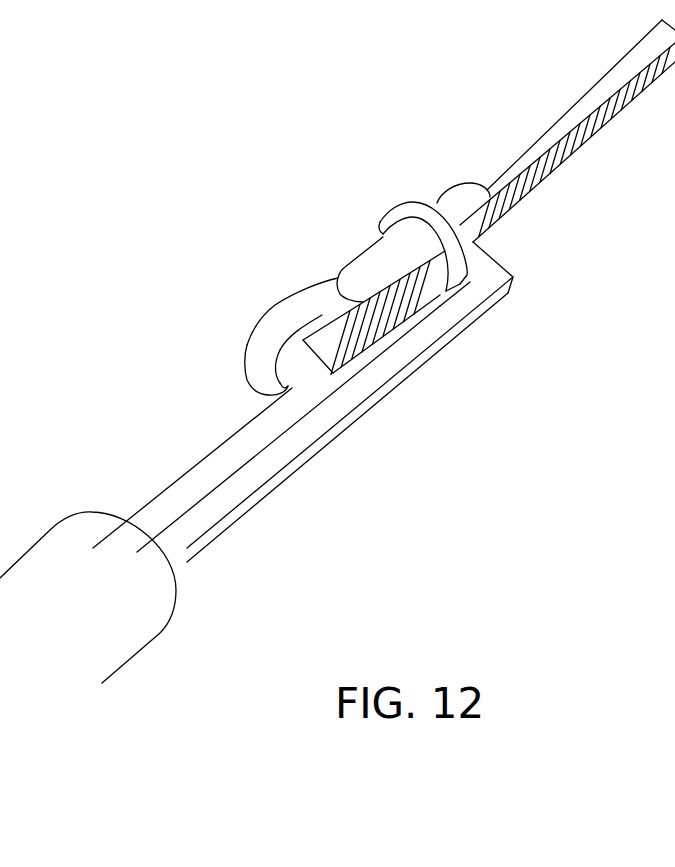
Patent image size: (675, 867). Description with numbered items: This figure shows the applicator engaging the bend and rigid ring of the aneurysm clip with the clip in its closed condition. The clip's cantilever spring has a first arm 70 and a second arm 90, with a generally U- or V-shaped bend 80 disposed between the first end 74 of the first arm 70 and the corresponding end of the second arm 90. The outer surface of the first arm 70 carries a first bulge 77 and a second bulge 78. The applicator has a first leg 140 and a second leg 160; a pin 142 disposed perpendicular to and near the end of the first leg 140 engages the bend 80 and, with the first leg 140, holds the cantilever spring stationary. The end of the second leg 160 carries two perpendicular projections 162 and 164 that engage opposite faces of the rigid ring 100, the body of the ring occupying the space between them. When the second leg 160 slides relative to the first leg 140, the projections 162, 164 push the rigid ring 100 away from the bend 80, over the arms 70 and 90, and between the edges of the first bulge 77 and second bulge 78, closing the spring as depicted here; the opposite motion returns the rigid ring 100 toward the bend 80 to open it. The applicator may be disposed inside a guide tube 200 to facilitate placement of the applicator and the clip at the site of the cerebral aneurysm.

The first arm 70 is at (538, 133).
The second arm 90 is at (594, 128).
The rigid ring 100 is at (420, 202).
The second bulge 78 is at (455, 200).
The first bulge 77 is at (363, 262).
The first end 74 is at (320, 290).
The bend 80 is at (258, 352).
The pin 142 is at (277, 390).
The first leg 140 is at (182, 488).
The projection 164 is at (433, 293).
The second leg 160 is at (293, 445).
The projection 162 is at (497, 257).
The guide tube 200 is at (157, 605).